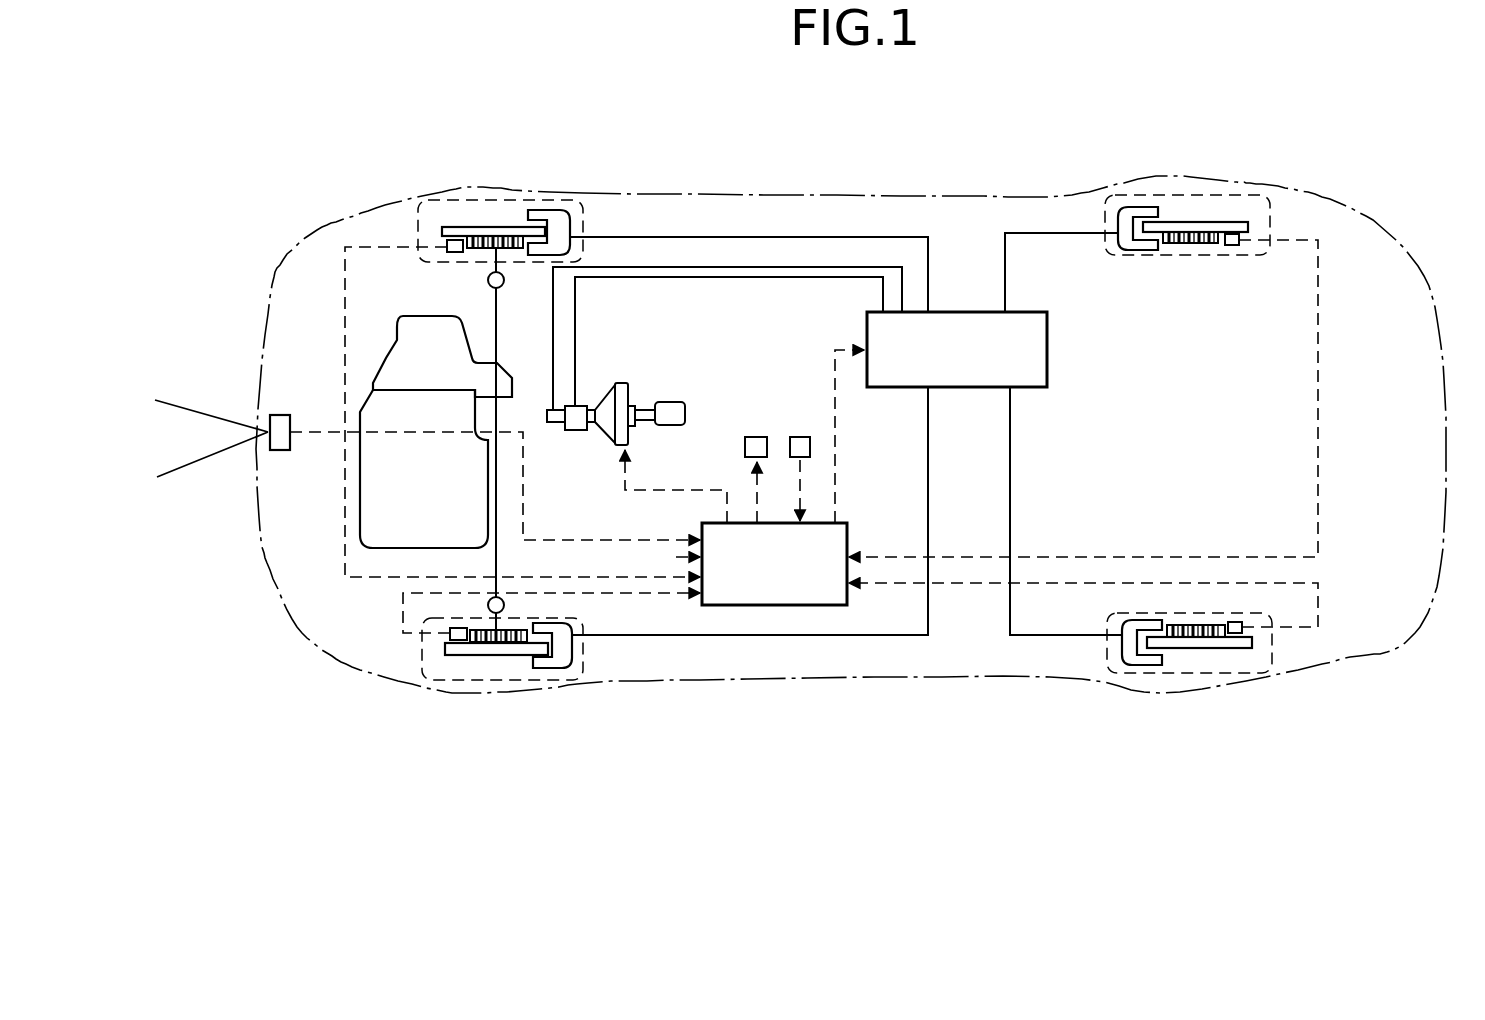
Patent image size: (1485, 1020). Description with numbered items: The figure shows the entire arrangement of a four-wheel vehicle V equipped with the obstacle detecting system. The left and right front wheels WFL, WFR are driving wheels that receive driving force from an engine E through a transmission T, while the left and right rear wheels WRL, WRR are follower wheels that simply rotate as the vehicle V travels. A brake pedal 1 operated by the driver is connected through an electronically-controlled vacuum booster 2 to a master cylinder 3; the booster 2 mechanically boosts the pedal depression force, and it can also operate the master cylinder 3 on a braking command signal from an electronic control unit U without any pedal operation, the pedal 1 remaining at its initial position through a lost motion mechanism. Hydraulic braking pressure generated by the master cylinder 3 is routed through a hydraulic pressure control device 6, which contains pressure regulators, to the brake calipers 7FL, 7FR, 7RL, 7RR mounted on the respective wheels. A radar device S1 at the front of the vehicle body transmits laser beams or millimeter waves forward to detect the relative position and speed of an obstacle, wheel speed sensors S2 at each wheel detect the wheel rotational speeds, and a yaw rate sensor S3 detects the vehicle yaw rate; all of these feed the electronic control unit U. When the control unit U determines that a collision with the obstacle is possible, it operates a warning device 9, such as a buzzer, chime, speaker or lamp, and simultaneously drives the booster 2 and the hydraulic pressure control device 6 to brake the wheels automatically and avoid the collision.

The four-wheel vehicle V is at (840, 157).
The right front wheel WFR is at (458, 198).
The left front wheel WFL is at (474, 683).
The right rear wheel WRR is at (1178, 196).
The left rear wheel WRL is at (1176, 676).
The brake caliper 7FR is at (550, 207).
The brake caliper 7FL is at (561, 672).
The brake caliper 7RR is at (1118, 204).
The brake caliper 7RL is at (1134, 670).
The radar device S1 is at (284, 430).
The wheel speed sensor S2 is at (447, 247).
The yaw rate sensor S3 is at (803, 435).
The transmission T is at (440, 370).
The engine E is at (434, 529).
The brake pedal 1 is at (677, 413).
The electronically-controlled vacuum booster 2 is at (621, 443).
The master cylinder 3 is at (558, 421).
The hydraulic pressure control device 6 is at (968, 371).
The warning device 9 is at (756, 435).
The electronic control unit U is at (793, 586).